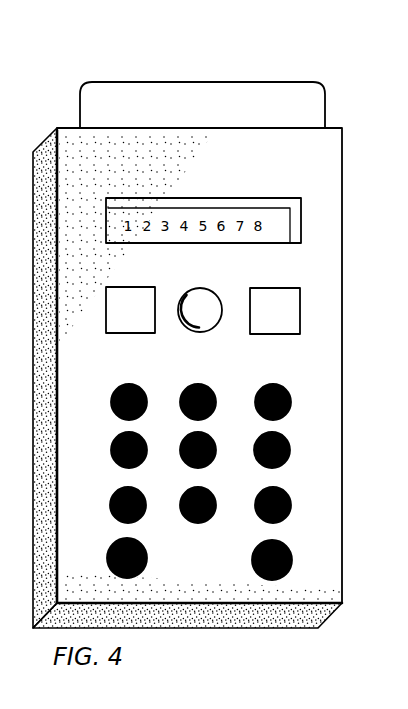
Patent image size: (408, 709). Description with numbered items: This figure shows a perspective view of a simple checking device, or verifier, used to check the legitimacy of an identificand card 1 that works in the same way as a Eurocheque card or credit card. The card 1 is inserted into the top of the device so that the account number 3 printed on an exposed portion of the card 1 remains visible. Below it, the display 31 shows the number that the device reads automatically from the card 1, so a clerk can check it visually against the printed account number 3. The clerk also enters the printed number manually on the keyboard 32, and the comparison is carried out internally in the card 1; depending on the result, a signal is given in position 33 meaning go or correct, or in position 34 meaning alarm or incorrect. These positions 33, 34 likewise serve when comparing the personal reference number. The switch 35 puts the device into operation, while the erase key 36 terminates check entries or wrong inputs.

The card 1 is at (80, 100).
The account number 3 is at (283, 103).
The display 31 is at (204, 378).
The keyboard 32 is at (290, 426).
The position 33 is at (122, 295).
The position 34 is at (296, 305).
The switch 35 is at (203, 290).
The erase key 36 is at (290, 557).